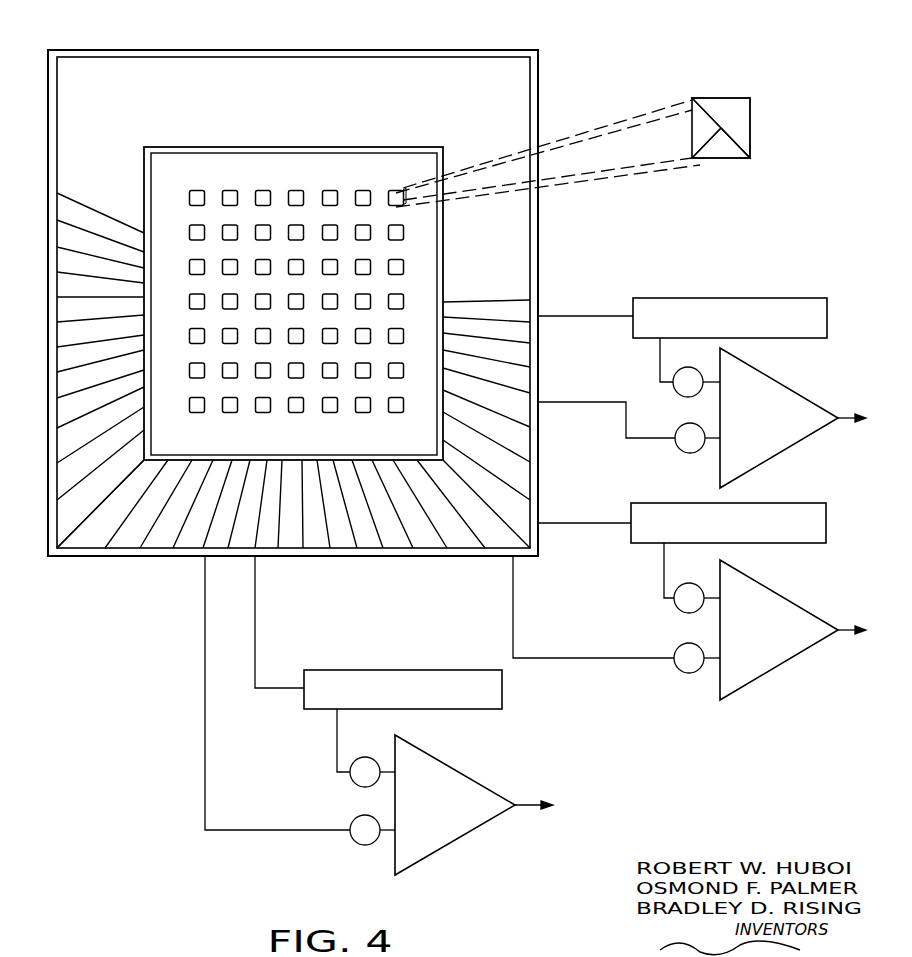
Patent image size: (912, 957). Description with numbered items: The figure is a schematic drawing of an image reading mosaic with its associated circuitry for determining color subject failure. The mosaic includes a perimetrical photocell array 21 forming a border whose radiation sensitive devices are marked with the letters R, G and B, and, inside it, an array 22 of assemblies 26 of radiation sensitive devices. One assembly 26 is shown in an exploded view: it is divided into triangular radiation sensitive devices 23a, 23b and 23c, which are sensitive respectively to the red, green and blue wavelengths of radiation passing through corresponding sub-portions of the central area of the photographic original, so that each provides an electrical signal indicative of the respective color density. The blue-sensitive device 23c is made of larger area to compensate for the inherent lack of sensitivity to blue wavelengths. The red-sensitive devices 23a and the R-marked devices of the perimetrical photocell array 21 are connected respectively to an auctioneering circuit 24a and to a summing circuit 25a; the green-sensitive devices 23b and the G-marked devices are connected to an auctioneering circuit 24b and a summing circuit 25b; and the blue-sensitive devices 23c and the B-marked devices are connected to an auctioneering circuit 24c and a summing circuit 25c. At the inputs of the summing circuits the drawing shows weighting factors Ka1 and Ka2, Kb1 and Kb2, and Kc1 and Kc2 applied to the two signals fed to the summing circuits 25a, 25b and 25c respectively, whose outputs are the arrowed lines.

The perimetrical photocell array 21 is at (173, 117).
The array of assemblies 22 is at (323, 167).
The assembly of radiation sensitive devices 26 is at (407, 187).
The radiation sensitive device sensitive to red 23a is at (693, 112).
The radiation sensitive device sensitive to green 23b is at (706, 152).
The radiation sensitive device sensitive to blue 23c is at (740, 128).
The auctioneering circuit 24a is at (815, 303).
The auctioneering circuit 24b is at (810, 512).
The auctioneering circuit 24c is at (362, 670).
The summing circuit 25a is at (821, 412).
The summing circuit 25b is at (766, 600).
The summing circuit 25c is at (430, 767).
The weighting multiplier Ka1 is at (680, 394).
The weighting multiplier Ka2 is at (690, 447).
The weighting multiplier Kb1 is at (683, 606).
The weighting multiplier Kb2 is at (687, 666).
The weighting multiplier Kc1 is at (360, 781).
The weighting multiplier Kc2 is at (362, 842).